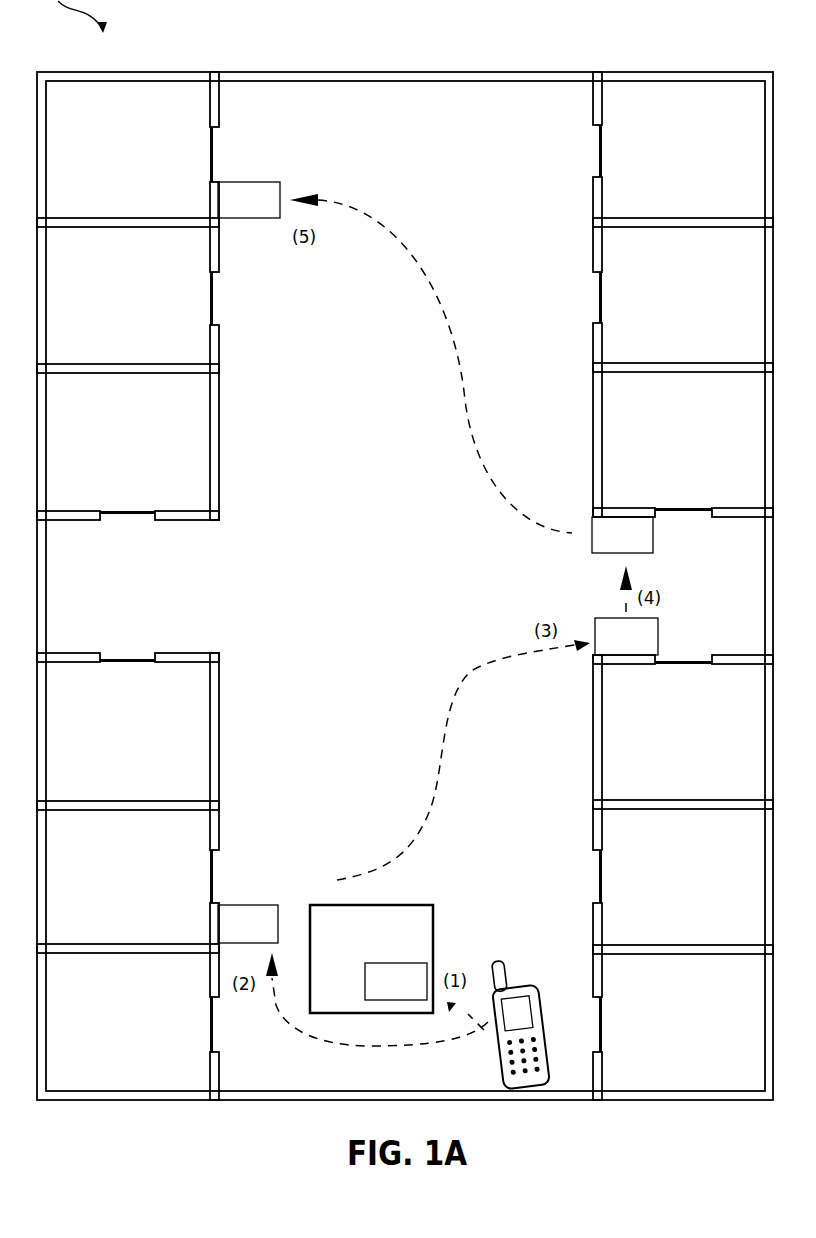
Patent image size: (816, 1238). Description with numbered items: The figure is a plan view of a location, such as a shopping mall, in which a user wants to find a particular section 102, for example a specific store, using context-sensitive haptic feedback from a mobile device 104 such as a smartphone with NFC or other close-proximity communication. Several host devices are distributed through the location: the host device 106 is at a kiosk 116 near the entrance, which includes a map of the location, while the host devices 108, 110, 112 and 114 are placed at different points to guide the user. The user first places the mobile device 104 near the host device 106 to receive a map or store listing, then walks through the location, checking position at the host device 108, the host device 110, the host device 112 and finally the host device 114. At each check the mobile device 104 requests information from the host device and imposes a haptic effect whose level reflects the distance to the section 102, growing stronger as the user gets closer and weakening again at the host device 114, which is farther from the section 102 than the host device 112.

The section 102 is at (706, 306).
The mobile device 104 is at (500, 962).
The host device HD1 106 is at (365, 964).
The host device HD2 108 is at (278, 905).
The host device HD3 110 is at (598, 618).
The host device HD4 112 is at (653, 546).
The host device HD5 114 is at (280, 182).
The kiosk 116 is at (433, 905).